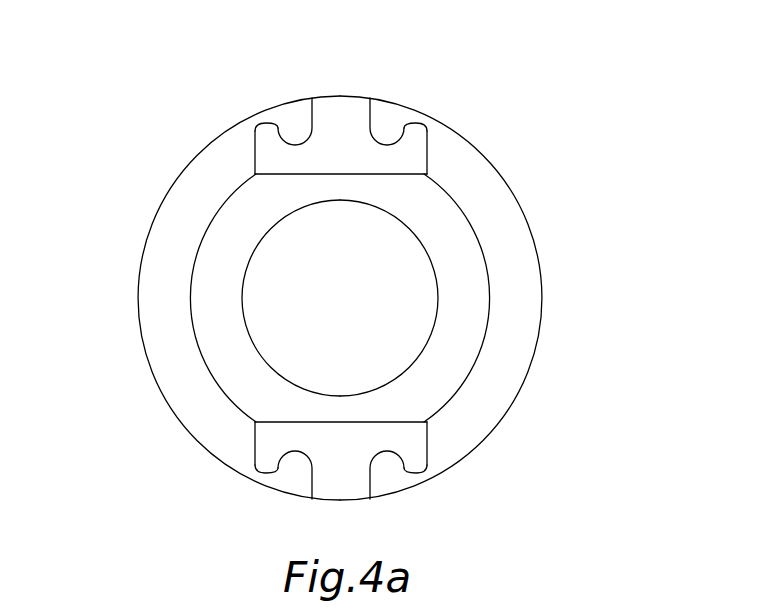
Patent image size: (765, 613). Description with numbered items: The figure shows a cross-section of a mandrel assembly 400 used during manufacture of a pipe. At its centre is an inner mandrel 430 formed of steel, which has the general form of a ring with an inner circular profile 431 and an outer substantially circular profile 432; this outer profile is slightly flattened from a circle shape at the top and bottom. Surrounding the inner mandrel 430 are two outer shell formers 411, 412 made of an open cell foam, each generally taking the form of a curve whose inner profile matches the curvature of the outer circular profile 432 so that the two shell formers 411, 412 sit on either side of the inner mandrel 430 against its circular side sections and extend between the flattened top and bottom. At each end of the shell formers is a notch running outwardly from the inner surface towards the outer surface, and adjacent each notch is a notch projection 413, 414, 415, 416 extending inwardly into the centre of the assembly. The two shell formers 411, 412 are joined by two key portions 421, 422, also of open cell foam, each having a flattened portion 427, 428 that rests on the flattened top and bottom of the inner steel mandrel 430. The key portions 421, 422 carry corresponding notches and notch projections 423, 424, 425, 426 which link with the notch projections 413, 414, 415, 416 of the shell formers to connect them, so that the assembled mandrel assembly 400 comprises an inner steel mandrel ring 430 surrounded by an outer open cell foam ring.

The mandrel assembly 400 is at (339, 293).
The outer shell former 411 is at (155, 310).
The outer shell former 412 is at (523, 330).
The notch projection 413 is at (292, 130).
The notch projection 414 is at (385, 125).
The notch projection 415 is at (297, 468).
The notch projection 416 is at (383, 465).
The key portion 421 is at (265, 150).
The key portion 422 is at (417, 435).
The notch projection of key portion 423 is at (267, 132).
The notch projection of key portion 424 is at (415, 133).
The notch projection of key portion 425 is at (255, 466).
The notch projection of key portion 426 is at (415, 462).
The flattened portion 427 is at (252, 185).
The flattened portion 428 is at (246, 429).
The inner mandrel 430 is at (450, 357).
The inner circular profile 431 is at (440, 277).
The outer substantially circular profile 432 is at (193, 270).